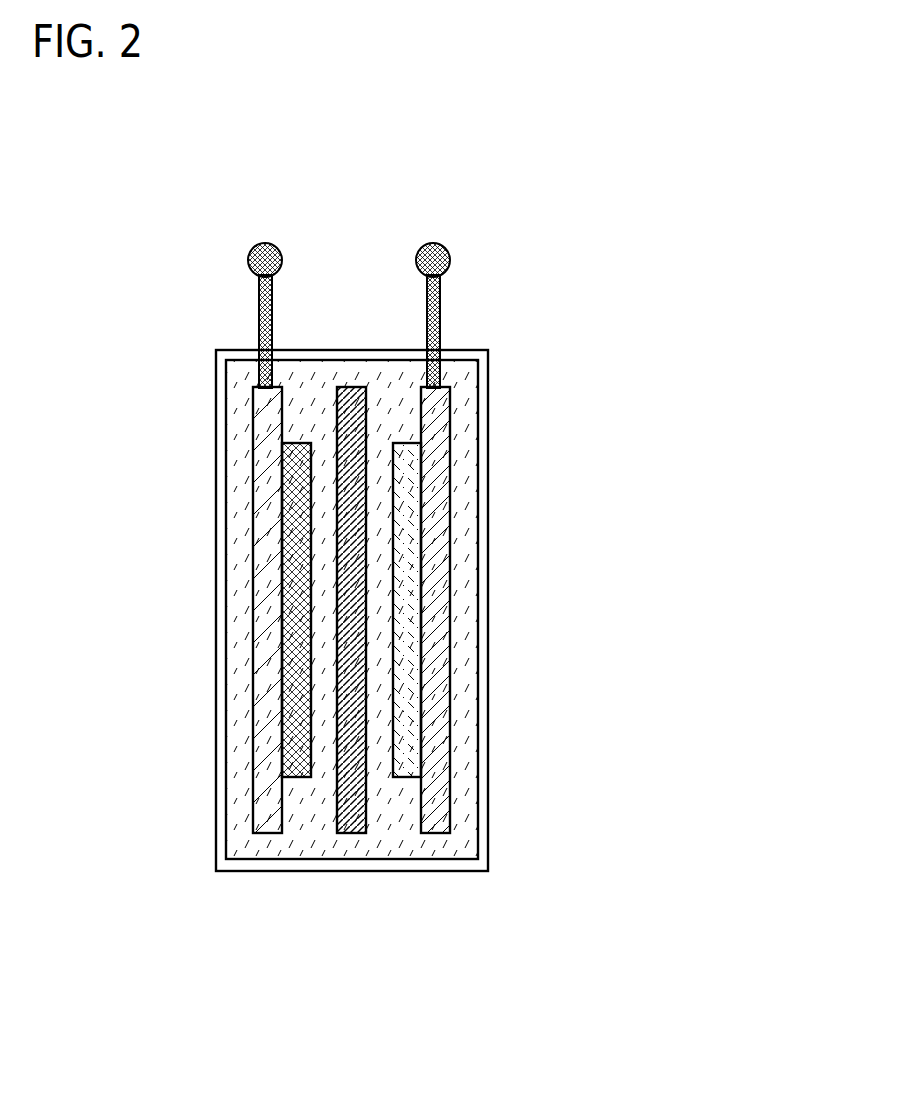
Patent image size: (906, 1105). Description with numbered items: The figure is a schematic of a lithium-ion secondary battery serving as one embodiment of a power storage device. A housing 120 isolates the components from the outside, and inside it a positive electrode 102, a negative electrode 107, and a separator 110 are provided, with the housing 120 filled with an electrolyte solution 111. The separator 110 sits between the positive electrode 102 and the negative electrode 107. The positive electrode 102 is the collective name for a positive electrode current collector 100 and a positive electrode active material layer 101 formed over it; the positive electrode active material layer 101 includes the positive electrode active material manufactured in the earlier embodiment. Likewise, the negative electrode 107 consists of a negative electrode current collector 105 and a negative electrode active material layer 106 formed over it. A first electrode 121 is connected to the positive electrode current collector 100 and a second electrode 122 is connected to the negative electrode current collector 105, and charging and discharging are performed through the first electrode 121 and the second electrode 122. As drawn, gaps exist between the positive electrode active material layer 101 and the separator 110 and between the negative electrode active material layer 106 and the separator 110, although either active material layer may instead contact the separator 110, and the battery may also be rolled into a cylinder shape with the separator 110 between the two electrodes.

The positive electrode current collector 100 is at (253, 832).
The positive electrode active material layer 101 is at (300, 773).
The positive electrode 102 is at (281, 688).
The negative electrode current collector 105 is at (445, 825).
The negative electrode active material layer 106 is at (403, 772).
The negative electrode 107 is at (453, 686).
The separator 110 is at (347, 387).
The electrolyte solution 111 is at (472, 377).
The housing 120 is at (482, 427).
The first electrode 121 is at (283, 260).
The second electrode 122 is at (451, 252).